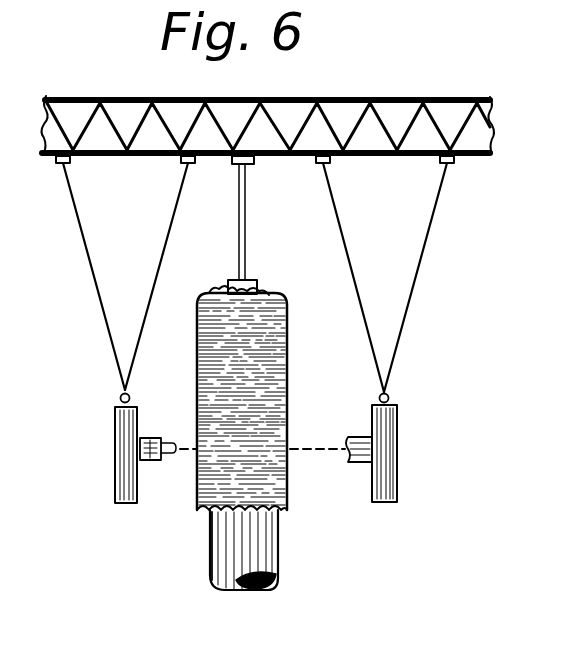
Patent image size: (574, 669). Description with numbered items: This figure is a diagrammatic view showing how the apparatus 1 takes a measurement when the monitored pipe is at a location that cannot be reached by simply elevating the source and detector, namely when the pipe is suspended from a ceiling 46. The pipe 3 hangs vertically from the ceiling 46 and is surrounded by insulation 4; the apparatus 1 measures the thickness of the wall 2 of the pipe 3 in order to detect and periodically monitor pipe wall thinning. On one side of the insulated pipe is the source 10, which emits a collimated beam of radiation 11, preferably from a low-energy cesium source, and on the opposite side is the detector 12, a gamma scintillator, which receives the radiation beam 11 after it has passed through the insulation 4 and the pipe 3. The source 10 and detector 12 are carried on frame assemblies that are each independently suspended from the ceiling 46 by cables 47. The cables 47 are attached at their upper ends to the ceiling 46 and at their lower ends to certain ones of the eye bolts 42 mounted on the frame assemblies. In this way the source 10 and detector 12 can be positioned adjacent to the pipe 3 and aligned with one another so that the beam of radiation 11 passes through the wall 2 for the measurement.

The ceiling 46 is at (472, 167).
The cables 47 is at (83, 238).
The eye bolts 42 is at (120, 394).
The apparatus 1 is at (118, 510).
The source 10 is at (151, 437).
The collimated beam of radiation 11 is at (197, 449).
The detector 12 is at (346, 440).
The insulation 4 is at (286, 492).
The pipe 3 is at (288, 563).
The wall 2 is at (215, 560).